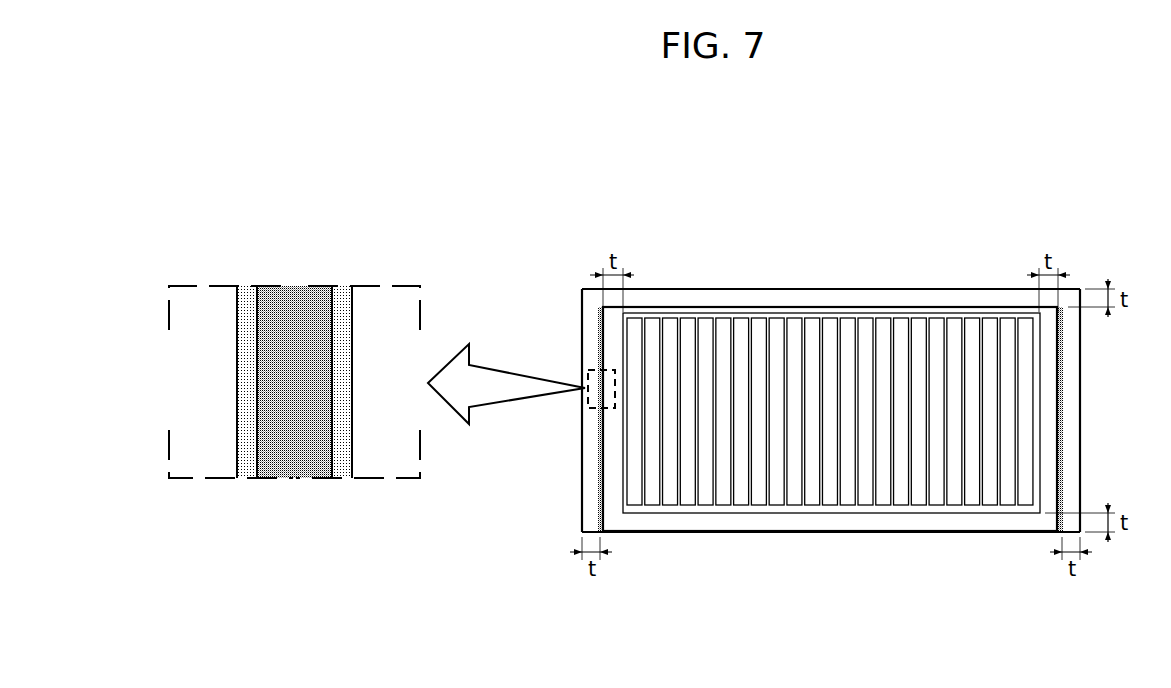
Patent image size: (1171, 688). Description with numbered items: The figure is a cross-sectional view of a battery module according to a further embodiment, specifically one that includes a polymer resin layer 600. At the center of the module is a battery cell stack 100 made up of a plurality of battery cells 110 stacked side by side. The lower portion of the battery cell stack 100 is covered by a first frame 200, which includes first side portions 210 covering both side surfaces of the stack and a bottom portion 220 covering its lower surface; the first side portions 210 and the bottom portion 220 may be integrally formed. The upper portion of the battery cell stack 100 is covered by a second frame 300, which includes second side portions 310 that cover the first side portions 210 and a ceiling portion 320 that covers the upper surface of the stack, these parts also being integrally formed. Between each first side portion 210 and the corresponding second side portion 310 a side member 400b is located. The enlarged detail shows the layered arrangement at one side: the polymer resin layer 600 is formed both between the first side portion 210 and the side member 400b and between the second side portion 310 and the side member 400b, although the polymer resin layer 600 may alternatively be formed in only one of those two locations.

The battery cell stack 100 is at (830, 463).
The battery cell 110 is at (955, 475).
The first frame 200 is at (706, 449).
The first side portion 210 is at (610, 455).
The bottom portion 220 is at (832, 533).
The second frame 300 is at (667, 392).
The second side portion 310 is at (587, 338).
The ceiling portion 320 is at (840, 289).
The side member 400b is at (600, 502).
The polymer resin layer 600 is at (342, 297).